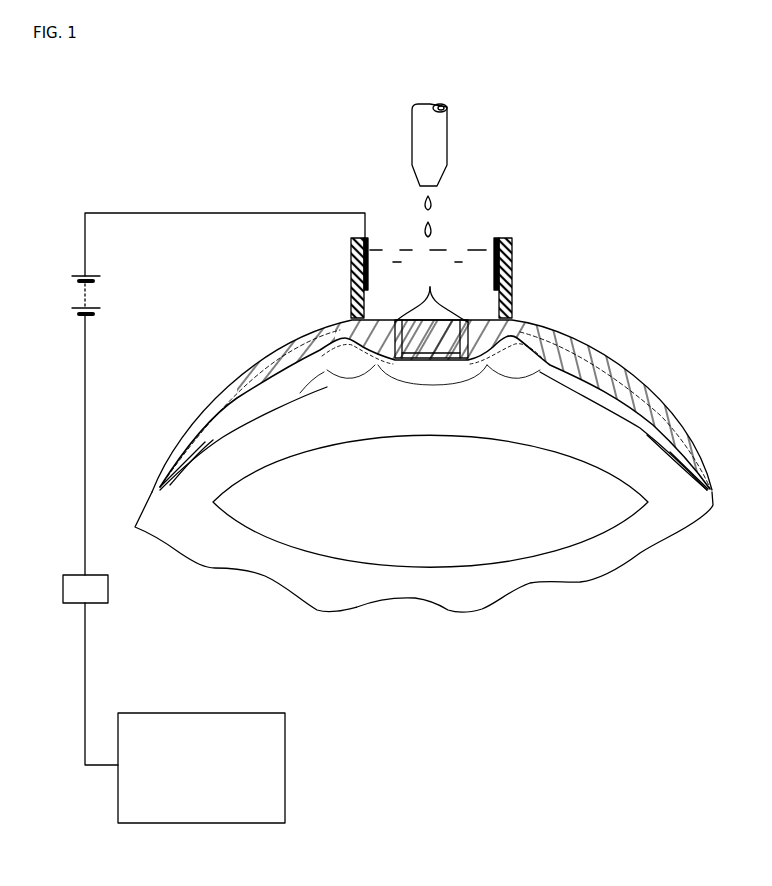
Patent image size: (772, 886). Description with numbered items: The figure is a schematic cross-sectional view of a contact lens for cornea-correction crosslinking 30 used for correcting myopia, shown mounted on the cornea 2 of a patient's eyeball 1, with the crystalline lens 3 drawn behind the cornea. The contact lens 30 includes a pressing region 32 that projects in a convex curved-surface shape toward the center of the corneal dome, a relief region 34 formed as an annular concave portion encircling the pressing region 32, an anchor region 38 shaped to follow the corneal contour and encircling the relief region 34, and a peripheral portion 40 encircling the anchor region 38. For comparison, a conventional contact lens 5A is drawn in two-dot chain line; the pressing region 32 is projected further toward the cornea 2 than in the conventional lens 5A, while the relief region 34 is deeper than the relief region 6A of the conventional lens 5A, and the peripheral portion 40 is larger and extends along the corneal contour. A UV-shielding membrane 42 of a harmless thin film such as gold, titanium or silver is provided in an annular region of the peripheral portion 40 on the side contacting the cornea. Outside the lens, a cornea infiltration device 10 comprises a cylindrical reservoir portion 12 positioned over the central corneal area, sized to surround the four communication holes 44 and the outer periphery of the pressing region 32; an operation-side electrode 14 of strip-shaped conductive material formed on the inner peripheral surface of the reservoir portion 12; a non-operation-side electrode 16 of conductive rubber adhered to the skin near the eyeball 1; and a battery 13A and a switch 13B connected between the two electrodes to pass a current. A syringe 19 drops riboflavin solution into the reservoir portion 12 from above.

The eyeball 1 is at (716, 530).
The cornea 2 is at (327, 383).
The crystalline lens 3 is at (594, 512).
The conventional contact lens 5A is at (617, 377).
The relief region of the conventional lens 6A is at (516, 322).
The cornea infiltration device 10 is at (516, 263).
The reservoir portion 12 is at (355, 278).
The battery 13A is at (100, 293).
The switch 13B is at (108, 588).
The operation-side electrode 14 is at (494, 260).
The non-operation-side electrode 16 is at (285, 762).
The syringe 19 is at (447, 135).
The contact lens for cornea-correction crosslinking 30 is at (282, 277).
The pressing region 32 is at (433, 385).
The relief region 34 is at (353, 378).
The anchor region 38 is at (270, 410).
The peripheral portion 40 is at (198, 462).
The UV-shielding membrane 42 is at (193, 445).
The communication holes 44 is at (431, 293).